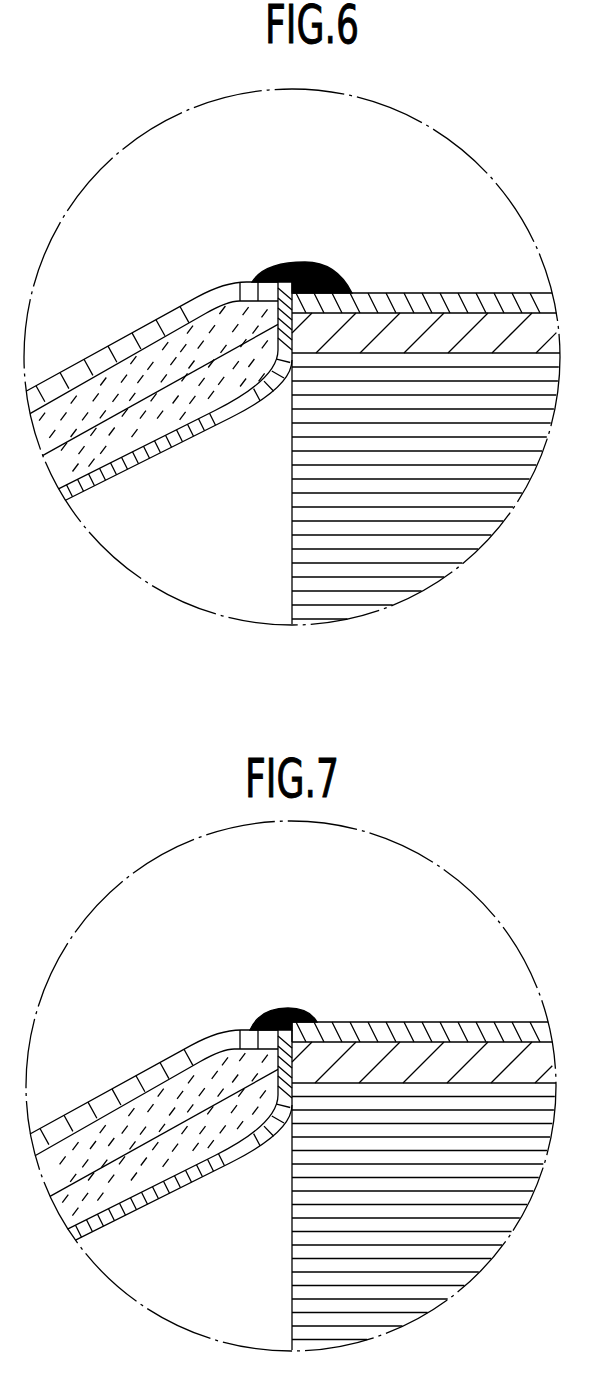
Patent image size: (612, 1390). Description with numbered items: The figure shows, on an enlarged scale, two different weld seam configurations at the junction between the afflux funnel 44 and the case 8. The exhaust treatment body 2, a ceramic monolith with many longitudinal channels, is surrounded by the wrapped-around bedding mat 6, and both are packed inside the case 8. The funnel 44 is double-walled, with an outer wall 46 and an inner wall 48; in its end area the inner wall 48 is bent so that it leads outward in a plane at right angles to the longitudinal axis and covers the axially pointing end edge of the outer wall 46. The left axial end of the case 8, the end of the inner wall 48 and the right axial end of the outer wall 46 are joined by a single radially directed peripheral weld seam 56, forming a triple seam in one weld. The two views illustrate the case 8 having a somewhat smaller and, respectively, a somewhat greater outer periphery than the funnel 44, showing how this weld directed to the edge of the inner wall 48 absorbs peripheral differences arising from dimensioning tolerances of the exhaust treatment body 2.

In FIG. 6, the exhaust treatment body 2 is at (300, 527).
In FIG. 7, the exhaust treatment body 2 is at (302, 1237).
In FIG. 6, the bedding mat 6 is at (460, 328).
In FIG. 7, the bedding mat 6 is at (460, 1060).
In FIG. 6, the case 8 is at (391, 303).
In FIG. 7, the case 8 is at (405, 1031).
In FIG. 6, the afflux funnel 44 is at (157, 287).
In FIG. 7, the afflux funnel 44 is at (157, 1025).
In FIG. 6, the outer wall 46 is at (105, 355).
In FIG. 7, the outer wall 46 is at (93, 1108).
In FIG. 6, the inner wall 48 is at (163, 440).
In FIG. 7, the inner wall 48 is at (162, 1188).
In FIG. 6, the peripheral weld seam 56 is at (305, 262).
In FIG. 7, the peripheral weld seam 56 is at (290, 1010).